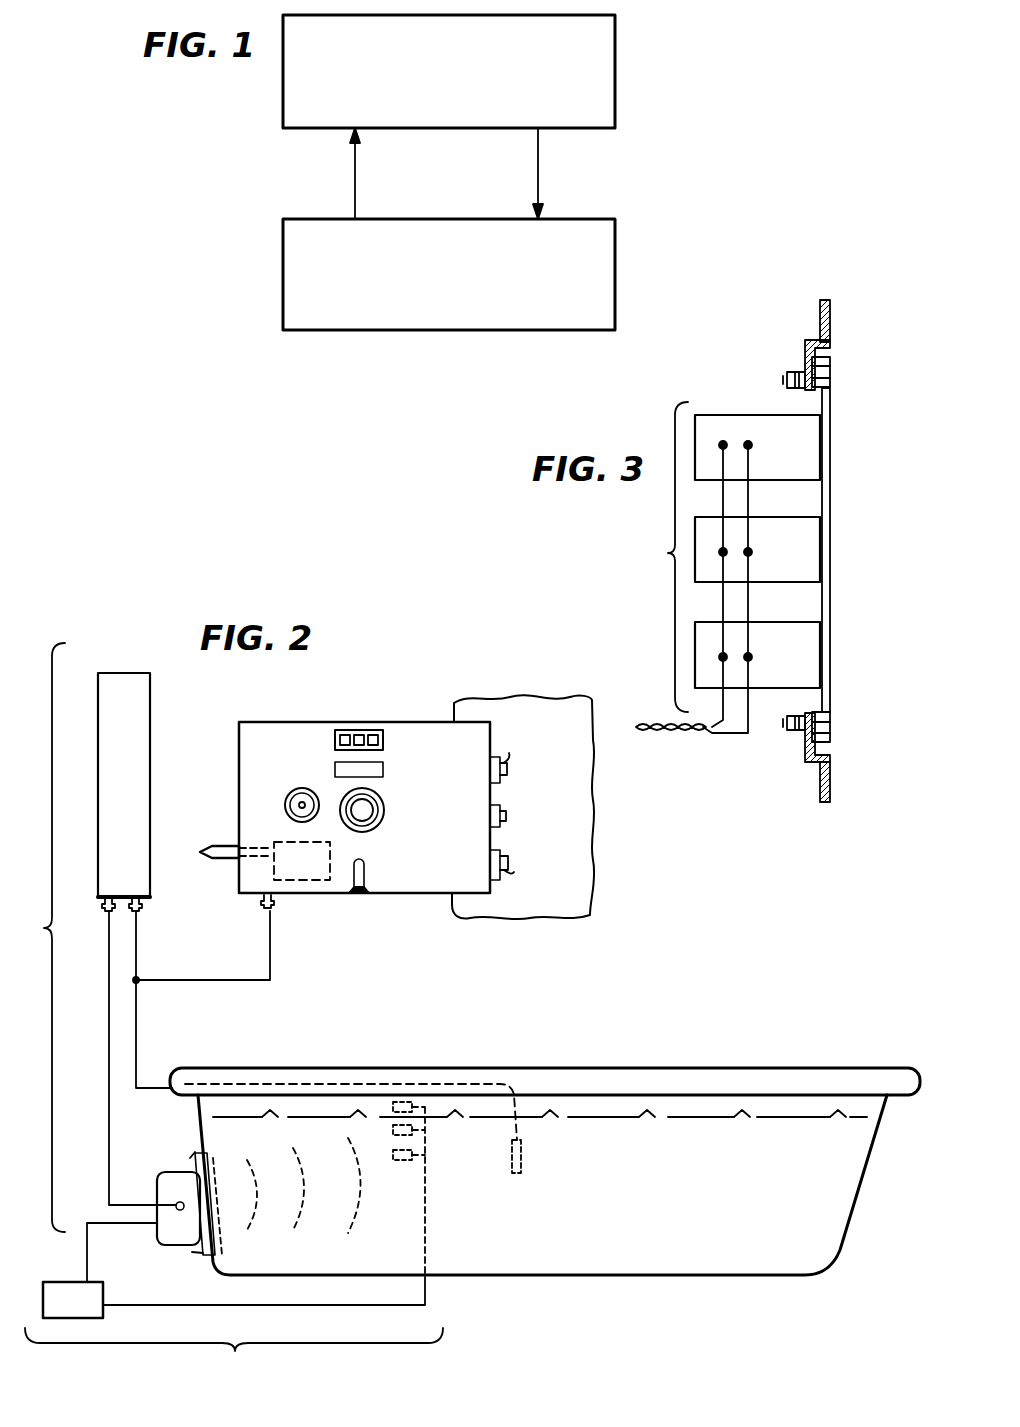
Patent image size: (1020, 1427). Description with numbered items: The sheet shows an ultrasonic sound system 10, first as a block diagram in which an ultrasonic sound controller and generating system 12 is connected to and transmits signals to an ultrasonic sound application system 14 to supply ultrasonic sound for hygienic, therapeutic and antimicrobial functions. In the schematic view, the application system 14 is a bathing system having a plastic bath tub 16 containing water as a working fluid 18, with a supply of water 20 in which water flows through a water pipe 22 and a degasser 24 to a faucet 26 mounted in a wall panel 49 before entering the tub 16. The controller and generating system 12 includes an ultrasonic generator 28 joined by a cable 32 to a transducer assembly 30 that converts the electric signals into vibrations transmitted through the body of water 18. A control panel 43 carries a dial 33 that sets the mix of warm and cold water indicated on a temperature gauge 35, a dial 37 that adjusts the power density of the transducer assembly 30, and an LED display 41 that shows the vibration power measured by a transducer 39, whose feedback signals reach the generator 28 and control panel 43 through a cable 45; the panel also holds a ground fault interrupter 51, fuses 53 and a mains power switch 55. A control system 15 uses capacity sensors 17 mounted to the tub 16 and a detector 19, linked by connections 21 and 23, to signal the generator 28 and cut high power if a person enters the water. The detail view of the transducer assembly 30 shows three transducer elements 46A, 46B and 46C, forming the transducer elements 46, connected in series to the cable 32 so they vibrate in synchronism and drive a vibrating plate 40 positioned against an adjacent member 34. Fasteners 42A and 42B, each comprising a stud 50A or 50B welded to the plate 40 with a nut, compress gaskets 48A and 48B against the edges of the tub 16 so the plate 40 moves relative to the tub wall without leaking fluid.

In FIG. 1, the ultrasonic sound system 10 is at (746, 101).
In FIG. 2, the ultrasonic sound system 10 is at (654, 862).
In FIG. 1, the ultrasonic sound controller and generating system 12 is at (615, 116).
In FIG. 2, the ultrasonic sound controller and generating system 12 is at (42, 937).
In FIG. 1, the ultrasonic sound application system 14 is at (604, 247).
In FIG. 2, the ultrasonic sound application system 14 is at (467, 1042).
In FIG. 2, the control system 15 is at (234, 1352).
In FIG. 3, the plastic bath tub 16 is at (830, 313).
In FIG. 2, the plastic bath tub 16 is at (874, 1158).
In FIG. 2, the sensors 17 is at (393, 1155).
In FIG. 2, the working fluid 18 is at (678, 1112).
In FIG. 2, the detector 19 is at (52, 1297).
In FIG. 2, the supply of water 20 is at (214, 845).
In FIG. 2, the power line 21 is at (177, 1306).
In FIG. 2, the water pipe 22 is at (263, 843).
In FIG. 2, the transducer power line 23 is at (87, 1254).
In FIG. 2, the degasser 24 is at (283, 862).
In FIG. 2, the faucet 26 is at (362, 897).
In FIG. 2, the ultrasonic generator 28 is at (114, 722).
In FIG. 3, the transducer assembly 30 is at (712, 361).
In FIG. 2, the transducer assembly 30 is at (172, 1232).
In FIG. 3, the cable 32 is at (691, 734).
In FIG. 2, the cable 32 is at (109, 950).
In FIG. 2, the dial 33 is at (384, 808).
In FIG. 3, the mounting plate 34 is at (832, 450).
In FIG. 2, the temperature gauge 35 is at (383, 770).
In FIG. 2, the dial 37 is at (291, 791).
In FIG. 2, the transducer 39 is at (521, 1155).
In FIG. 3, the vibrating plate 40 is at (830, 683).
In FIG. 2, the LED display 41 is at (353, 728).
In FIG. 3, the fastener 42A is at (795, 359).
In FIG. 3, the fastener 42B is at (796, 738).
In FIG. 2, the control panel 43 is at (306, 729).
In FIG. 2, the cable 45 is at (137, 1018).
In FIG. 3, the transducer elements 46 is at (659, 557).
In FIG. 3, the transducer element 46A is at (768, 427).
In FIG. 3, the transducer element 46B is at (769, 530).
In FIG. 3, the transducer element 46C is at (777, 637).
In FIG. 3, the gasket 48A is at (831, 360).
In FIG. 3, the gasket 48B is at (820, 725).
In FIG. 2, the wall panel 49 is at (530, 708).
In FIG. 3, the stud 50A is at (818, 378).
In FIG. 3, the stud 50B is at (818, 718).
In FIG. 2, the ground fault interrupter 51 is at (500, 766).
In FIG. 2, the fuses 53 is at (500, 814).
In FIG. 2, the mains power switch 55 is at (502, 866).